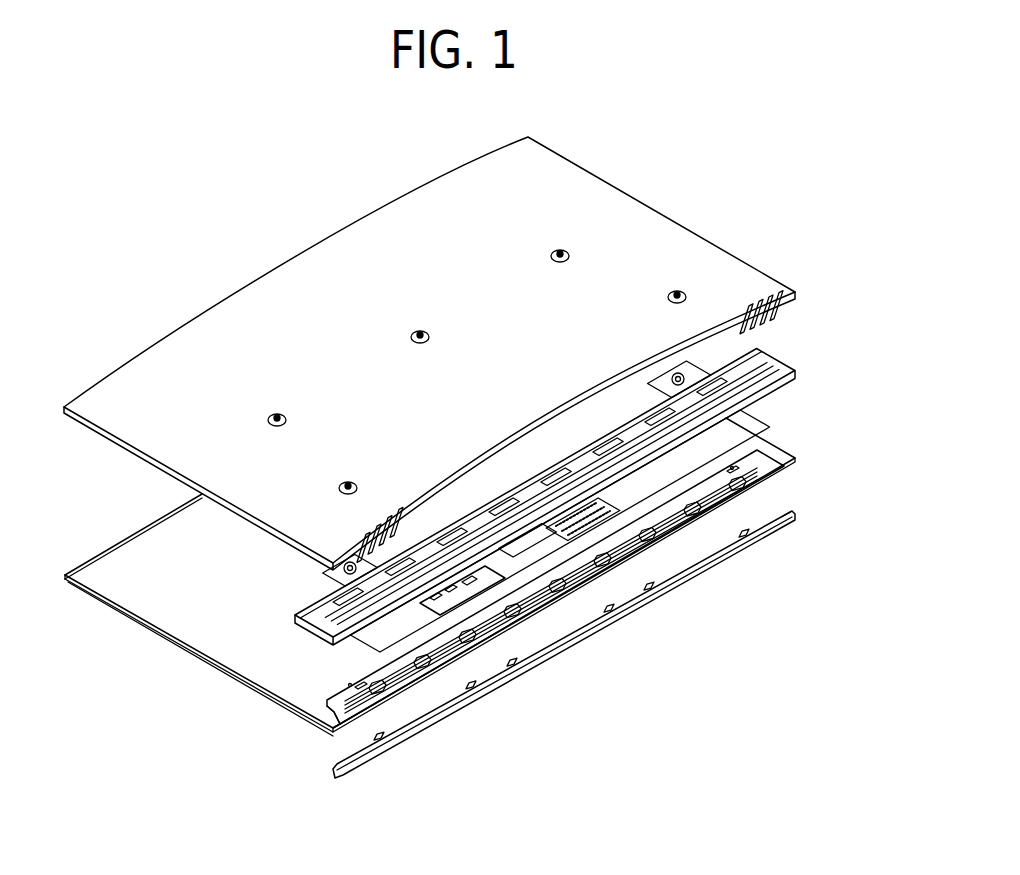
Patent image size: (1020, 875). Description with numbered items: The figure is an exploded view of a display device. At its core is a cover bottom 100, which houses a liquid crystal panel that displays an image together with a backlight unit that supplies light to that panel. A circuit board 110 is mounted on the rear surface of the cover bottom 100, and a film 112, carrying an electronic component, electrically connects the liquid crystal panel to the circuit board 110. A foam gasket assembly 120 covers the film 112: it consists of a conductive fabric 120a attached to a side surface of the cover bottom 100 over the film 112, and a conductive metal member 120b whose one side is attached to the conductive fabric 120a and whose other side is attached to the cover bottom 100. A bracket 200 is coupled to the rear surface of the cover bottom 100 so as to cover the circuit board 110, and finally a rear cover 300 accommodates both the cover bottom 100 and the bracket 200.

The cover bottom 100 is at (198, 639).
The circuit board 110 is at (320, 703).
The film 112 is at (342, 736).
The foam gasket assembly 120 is at (564, 657).
The conductive fabric 120a is at (398, 737).
The conductive metal member 120b is at (474, 692).
The bracket 200 is at (773, 353).
The rear cover 300 is at (742, 276).